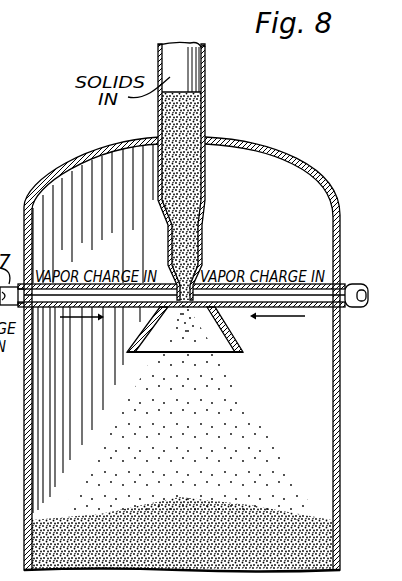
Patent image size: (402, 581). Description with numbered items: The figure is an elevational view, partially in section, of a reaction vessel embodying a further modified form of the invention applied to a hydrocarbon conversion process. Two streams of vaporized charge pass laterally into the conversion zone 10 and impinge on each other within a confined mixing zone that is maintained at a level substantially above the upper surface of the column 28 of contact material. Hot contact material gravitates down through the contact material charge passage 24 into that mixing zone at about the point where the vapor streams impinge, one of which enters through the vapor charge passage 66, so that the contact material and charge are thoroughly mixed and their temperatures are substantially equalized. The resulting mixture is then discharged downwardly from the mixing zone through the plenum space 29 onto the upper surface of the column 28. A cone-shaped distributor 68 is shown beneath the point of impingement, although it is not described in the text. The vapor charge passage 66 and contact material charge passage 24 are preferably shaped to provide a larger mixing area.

The conversion zone 10 is at (262, 148).
The contact material charge passage 24 is at (205, 108).
The column 28 is at (333, 540).
The plenum space 29 is at (307, 386).
The vapor charge passage 66 is at (352, 283).
The distributor cone 68 is at (237, 346).